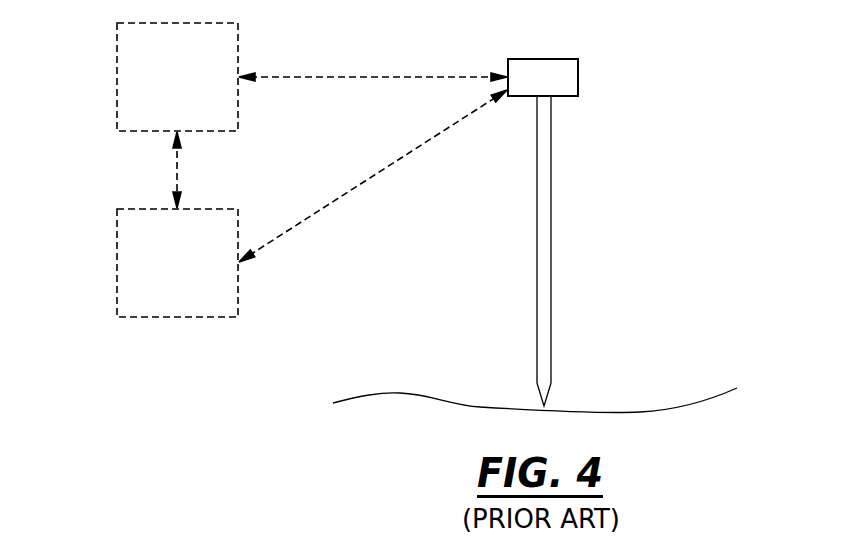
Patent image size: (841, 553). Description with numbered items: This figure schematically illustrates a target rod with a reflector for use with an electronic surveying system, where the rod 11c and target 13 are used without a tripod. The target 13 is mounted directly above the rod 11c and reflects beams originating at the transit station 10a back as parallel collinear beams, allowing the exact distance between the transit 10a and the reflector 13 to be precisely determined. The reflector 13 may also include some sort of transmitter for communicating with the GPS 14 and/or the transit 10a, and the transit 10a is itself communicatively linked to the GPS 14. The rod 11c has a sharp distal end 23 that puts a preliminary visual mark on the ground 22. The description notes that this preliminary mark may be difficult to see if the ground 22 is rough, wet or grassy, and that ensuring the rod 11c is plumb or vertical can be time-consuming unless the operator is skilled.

The GPS 14 is at (117, 103).
The transit station 10a is at (117, 268).
The target reflector 13 is at (539, 59).
The rod 11c is at (557, 231).
The ground 22 is at (377, 393).
The sharp distal end 23 is at (548, 395).